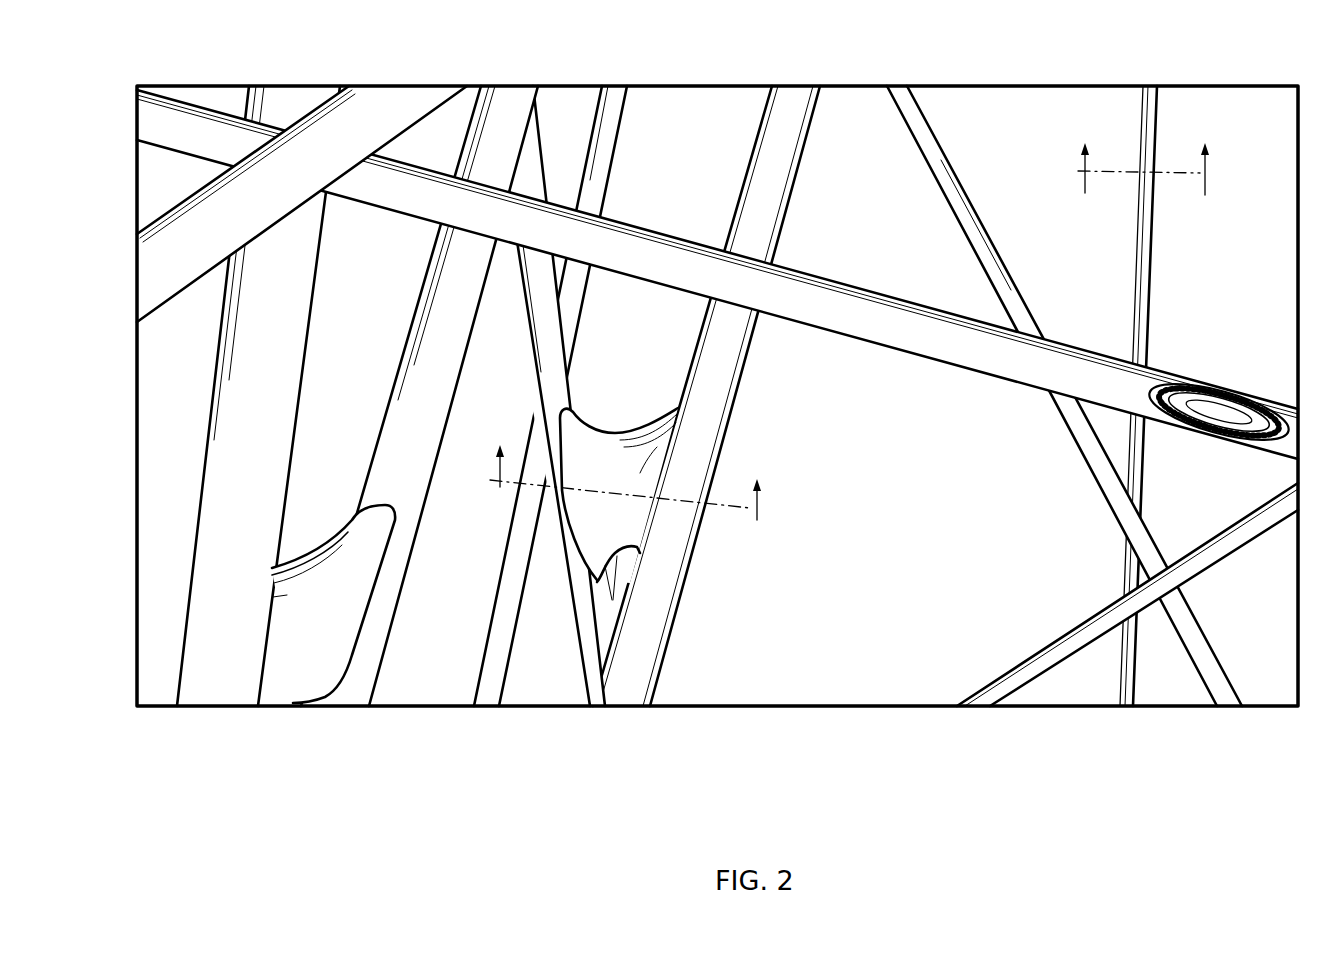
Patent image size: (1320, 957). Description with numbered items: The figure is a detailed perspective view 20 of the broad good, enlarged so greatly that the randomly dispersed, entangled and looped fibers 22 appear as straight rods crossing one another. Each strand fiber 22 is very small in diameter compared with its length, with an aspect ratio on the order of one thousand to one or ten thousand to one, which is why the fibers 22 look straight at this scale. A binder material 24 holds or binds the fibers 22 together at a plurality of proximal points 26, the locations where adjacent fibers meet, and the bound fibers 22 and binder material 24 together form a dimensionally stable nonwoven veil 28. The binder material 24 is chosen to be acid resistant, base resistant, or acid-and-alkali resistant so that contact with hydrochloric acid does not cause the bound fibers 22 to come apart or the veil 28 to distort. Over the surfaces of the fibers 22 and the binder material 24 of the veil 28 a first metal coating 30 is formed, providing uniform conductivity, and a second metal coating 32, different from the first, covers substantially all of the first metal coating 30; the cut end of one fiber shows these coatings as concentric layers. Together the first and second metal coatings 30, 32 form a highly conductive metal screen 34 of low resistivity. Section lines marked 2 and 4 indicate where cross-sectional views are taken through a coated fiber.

The detailed perspective view 20 is at (1218, 85).
The fibers 22 is at (292, 85).
The binder material 24 is at (580, 433).
The proximal points 26 is at (563, 530).
The dimensionally stable nonwoven veil 28 is at (795, 553).
The first metal coating 30 is at (1188, 390).
The second metal coating 32 is at (1158, 387).
The highly conductive metal screen 34 is at (802, 603).
The section line 2- 2 is at (1147, 179).
The section line 4- 4 is at (623, 495).